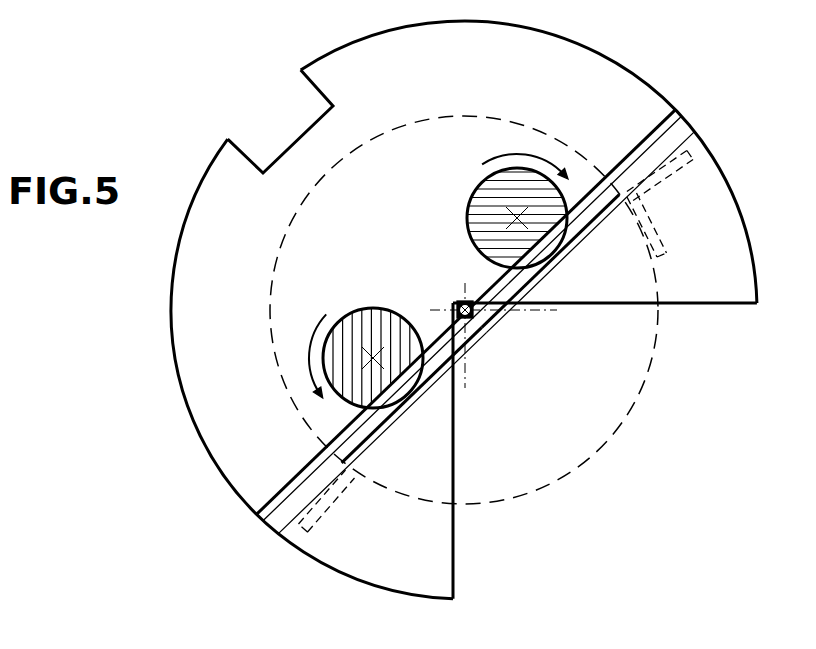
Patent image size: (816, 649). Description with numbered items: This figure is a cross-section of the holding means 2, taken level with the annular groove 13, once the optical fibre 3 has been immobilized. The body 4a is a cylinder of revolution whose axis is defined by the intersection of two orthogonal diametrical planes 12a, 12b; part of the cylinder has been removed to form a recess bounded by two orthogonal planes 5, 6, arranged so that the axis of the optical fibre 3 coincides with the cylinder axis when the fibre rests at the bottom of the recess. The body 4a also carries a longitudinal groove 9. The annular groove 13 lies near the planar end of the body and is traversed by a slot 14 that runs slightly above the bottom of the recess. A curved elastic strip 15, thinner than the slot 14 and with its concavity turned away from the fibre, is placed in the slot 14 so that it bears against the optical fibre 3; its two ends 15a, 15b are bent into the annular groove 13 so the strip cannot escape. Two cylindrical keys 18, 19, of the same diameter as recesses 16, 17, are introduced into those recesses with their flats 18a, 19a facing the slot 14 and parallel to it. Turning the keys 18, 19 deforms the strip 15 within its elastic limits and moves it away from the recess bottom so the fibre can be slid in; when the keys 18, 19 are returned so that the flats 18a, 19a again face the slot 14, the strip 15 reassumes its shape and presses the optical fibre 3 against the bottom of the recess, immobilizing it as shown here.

The holding means 2 is at (577, 42).
The optical fibre 3 is at (457, 298).
The body 4a is at (211, 461).
The orthogonal plane 5 is at (678, 306).
The orthogonal plane 6 is at (455, 528).
The longitudinal groove 9 is at (288, 116).
The diametrical plane 12a is at (530, 316).
The diametrical plane 12b is at (466, 357).
The annular groove 13 is at (277, 254).
The slot 14 is at (272, 518).
The curved elastic strip 15 is at (474, 322).
The end of strip 15a is at (653, 226).
The end of strip 15b is at (377, 496).
The recess 16 is at (555, 192).
The recess 17 is at (333, 402).
The cylindrical key 18 is at (469, 206).
The flat 18a is at (557, 255).
The cylindrical key 19 is at (352, 322).
The flat 19a is at (382, 420).